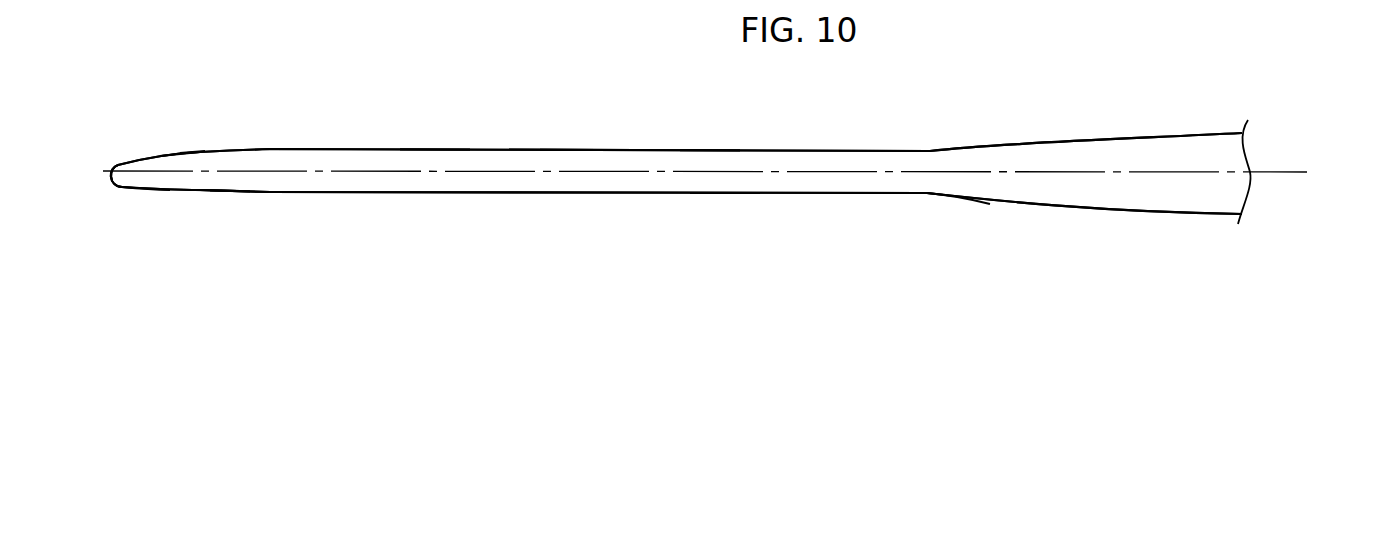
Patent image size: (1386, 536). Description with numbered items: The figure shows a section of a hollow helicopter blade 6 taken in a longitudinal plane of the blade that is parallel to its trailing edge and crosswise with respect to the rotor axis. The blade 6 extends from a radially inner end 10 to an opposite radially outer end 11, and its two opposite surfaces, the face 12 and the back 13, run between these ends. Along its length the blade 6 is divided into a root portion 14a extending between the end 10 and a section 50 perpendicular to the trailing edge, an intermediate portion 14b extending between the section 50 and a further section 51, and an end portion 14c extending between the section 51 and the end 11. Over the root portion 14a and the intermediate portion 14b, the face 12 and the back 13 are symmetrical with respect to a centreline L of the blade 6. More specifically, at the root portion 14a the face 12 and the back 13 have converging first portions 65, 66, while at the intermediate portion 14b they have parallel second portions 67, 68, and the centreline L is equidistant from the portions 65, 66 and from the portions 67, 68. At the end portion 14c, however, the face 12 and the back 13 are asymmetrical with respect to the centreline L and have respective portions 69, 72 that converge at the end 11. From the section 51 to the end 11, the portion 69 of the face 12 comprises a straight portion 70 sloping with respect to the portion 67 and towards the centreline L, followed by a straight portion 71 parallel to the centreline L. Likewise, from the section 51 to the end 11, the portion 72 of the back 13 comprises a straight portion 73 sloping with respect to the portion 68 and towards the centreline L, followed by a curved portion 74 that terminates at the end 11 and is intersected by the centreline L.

The end 10 is at (1268, 200).
The blade 6 is at (433, 145).
The end 11 is at (105, 191).
The face 12 is at (727, 197).
The back 13 is at (710, 148).
The root portion 14a is at (1075, 140).
The intermediate portion 14b is at (567, 147).
The end portion 14c is at (203, 194).
The section 50 is at (932, 195).
The section 51 is at (270, 148).
The first portion 65 is at (1103, 212).
The first portion 66 is at (1162, 131).
The second portion 67 is at (447, 193).
The second portion 68 is at (400, 147).
The portion 69 is at (208, 239).
The straight portion 70 is at (228, 196).
The straight portion 71 is at (157, 198).
The portion 72 is at (178, 110).
The straight portion 73 is at (192, 150).
The curved portion 74 is at (117, 160).
The centreline L is at (835, 170).